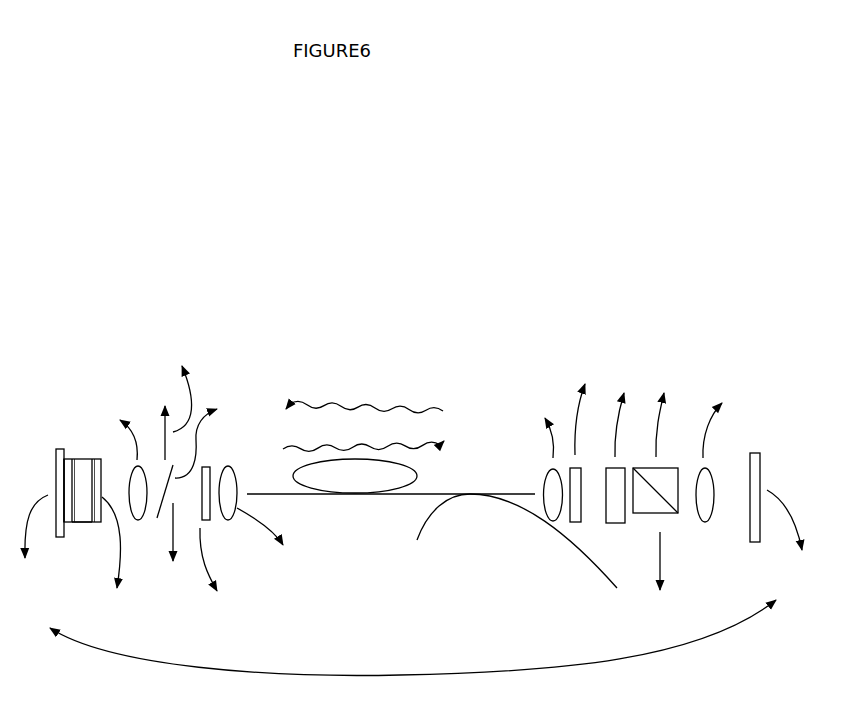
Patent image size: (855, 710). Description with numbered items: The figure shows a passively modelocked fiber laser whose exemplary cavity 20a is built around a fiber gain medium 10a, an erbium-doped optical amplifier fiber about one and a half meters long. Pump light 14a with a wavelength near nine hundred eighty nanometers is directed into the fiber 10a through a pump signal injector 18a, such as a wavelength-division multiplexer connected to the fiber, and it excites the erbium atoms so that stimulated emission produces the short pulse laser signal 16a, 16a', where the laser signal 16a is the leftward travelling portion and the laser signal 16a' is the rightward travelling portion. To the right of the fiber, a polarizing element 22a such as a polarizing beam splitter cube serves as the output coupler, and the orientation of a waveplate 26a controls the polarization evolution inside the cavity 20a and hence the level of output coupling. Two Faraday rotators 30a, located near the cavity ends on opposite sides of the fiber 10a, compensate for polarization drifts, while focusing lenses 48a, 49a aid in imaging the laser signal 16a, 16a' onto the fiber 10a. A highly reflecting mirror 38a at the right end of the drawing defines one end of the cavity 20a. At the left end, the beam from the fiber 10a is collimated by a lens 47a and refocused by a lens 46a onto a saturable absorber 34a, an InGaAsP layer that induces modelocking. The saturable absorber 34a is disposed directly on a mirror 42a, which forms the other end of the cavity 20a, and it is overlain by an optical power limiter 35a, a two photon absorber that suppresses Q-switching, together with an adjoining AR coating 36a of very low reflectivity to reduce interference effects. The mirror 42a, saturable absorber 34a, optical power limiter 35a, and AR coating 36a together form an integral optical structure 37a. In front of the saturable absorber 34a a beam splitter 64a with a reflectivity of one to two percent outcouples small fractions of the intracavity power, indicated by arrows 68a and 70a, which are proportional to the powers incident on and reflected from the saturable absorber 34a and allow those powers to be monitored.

The fiber gain medium 10a is at (391, 493).
The pump light 14a is at (628, 584).
The leftward travelling laser signal 16a is at (364, 397).
The rightward travelling laser signal 16a' is at (363, 434).
The pump signal injector 18a is at (517, 541).
The cavity 20a is at (413, 637).
The polarizing element 22a is at (659, 439).
The waveplate 26a is at (622, 444).
The Faraday rotator 30a is at (402, 482).
The saturable absorber 34a is at (72, 535).
The optical power limiter 35a is at (80, 523).
The AR coating 36a is at (110, 557).
The integral optical structure 37a is at (100, 448).
The highly reflecting mirror 38a is at (780, 524).
The mirror 42a is at (29, 542).
The lens 46a is at (136, 455).
The lens 47a is at (258, 524).
The focusing lens 48a is at (543, 456).
The focusing lens 49a is at (717, 452).
The beam splitter 64a is at (210, 430).
The outcoupled power fraction 68a is at (172, 569).
The outcoupled power fraction 70a is at (178, 426).